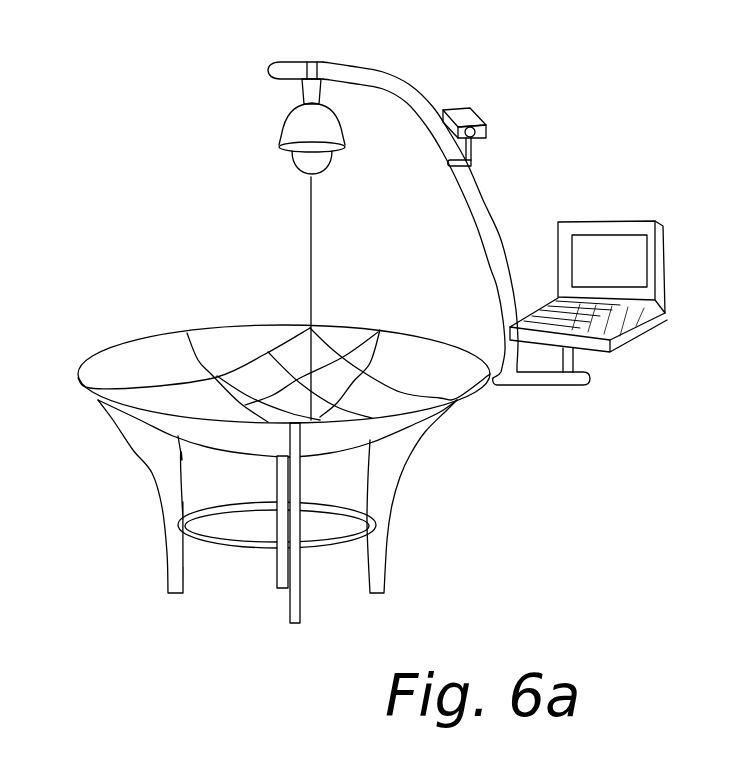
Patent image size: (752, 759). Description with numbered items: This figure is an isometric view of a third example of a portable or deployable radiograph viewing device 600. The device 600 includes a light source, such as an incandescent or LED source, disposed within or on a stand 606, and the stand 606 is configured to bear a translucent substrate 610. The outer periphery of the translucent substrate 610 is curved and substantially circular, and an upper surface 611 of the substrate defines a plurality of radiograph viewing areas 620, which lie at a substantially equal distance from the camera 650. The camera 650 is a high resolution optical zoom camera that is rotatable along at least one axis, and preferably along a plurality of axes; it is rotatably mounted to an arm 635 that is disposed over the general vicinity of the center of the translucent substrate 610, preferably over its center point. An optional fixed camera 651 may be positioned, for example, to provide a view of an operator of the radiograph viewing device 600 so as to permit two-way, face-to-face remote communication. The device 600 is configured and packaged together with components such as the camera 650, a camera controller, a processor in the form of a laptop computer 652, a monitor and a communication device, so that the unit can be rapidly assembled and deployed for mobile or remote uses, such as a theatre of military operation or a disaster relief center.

The radiograph viewing device 600 is at (65, 465).
The stand 606 is at (397, 462).
The translucent substrate 610 is at (178, 432).
The upper surface 611 is at (113, 358).
The radiograph viewing areas 620 is at (250, 382).
The arm 635 is at (378, 87).
The camera 650 is at (290, 128).
The fixed camera 651 is at (462, 117).
The laptop computer 652 is at (635, 245).